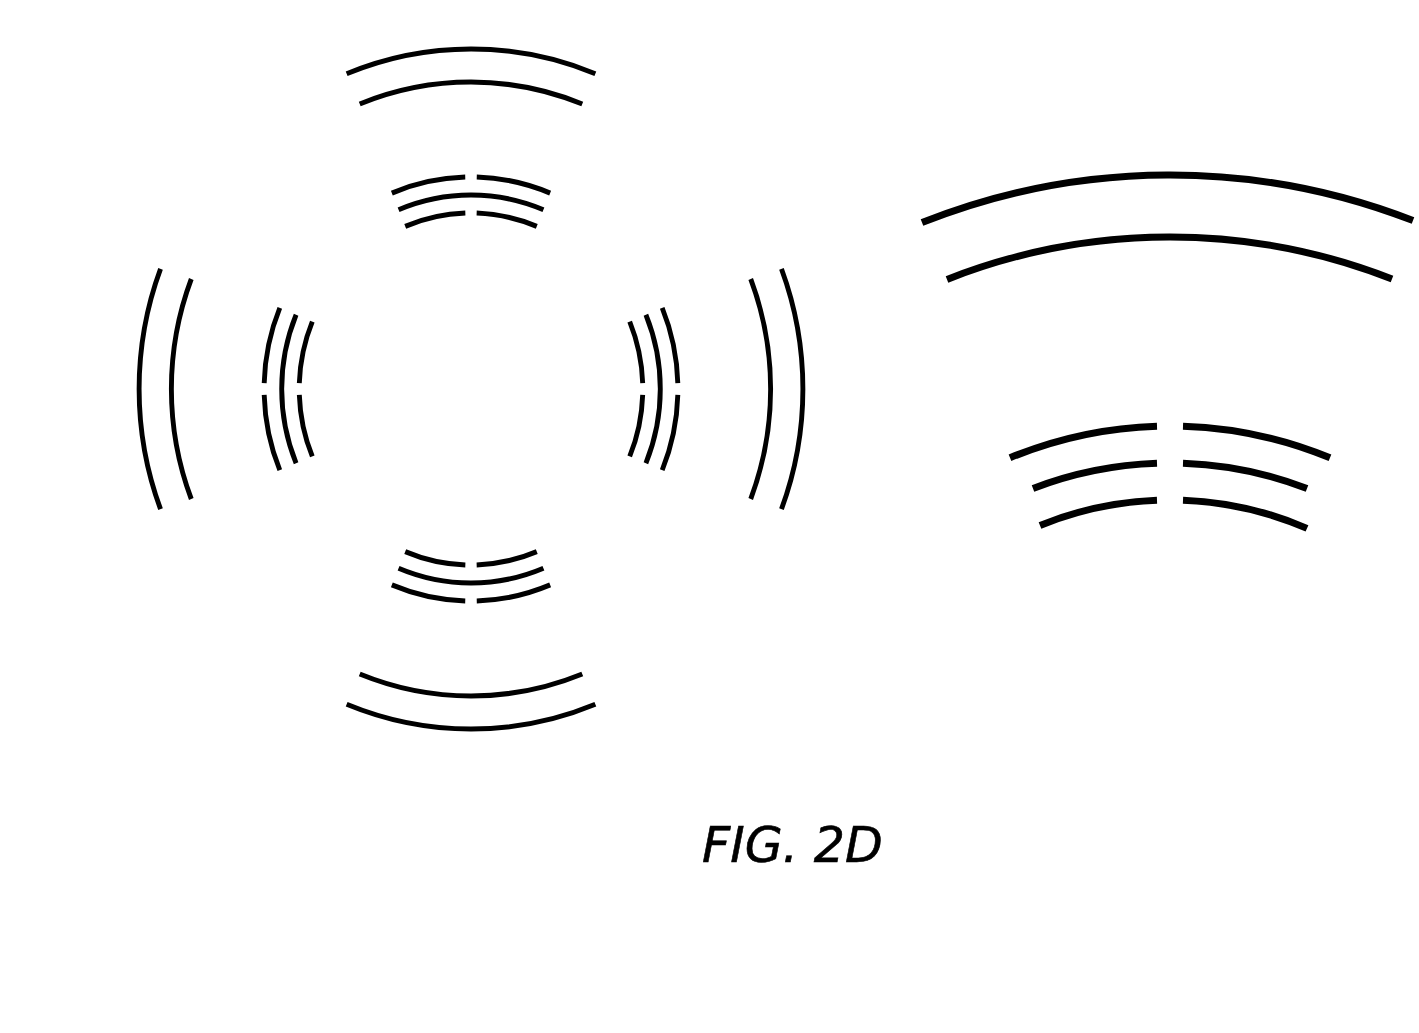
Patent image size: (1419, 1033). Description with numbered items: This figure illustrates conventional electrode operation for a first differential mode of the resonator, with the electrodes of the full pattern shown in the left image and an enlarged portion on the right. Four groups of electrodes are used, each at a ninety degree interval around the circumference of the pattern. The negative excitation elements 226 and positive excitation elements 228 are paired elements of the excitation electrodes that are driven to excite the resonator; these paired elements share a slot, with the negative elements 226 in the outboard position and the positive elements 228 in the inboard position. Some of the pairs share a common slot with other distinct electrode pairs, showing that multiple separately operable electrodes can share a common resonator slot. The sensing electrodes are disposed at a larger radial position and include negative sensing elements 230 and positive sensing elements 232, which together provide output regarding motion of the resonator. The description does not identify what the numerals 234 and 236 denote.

The negative excitation elements 226 is at (1160, 414).
The positive excitation elements 228 is at (1093, 443).
The negative sensing elements 230 is at (1150, 237).
The positive sensing elements 232 is at (1060, 263).
The intermediate conductive traces 234 is at (1190, 402).
The electrode array pattern 236 is at (206, 108).